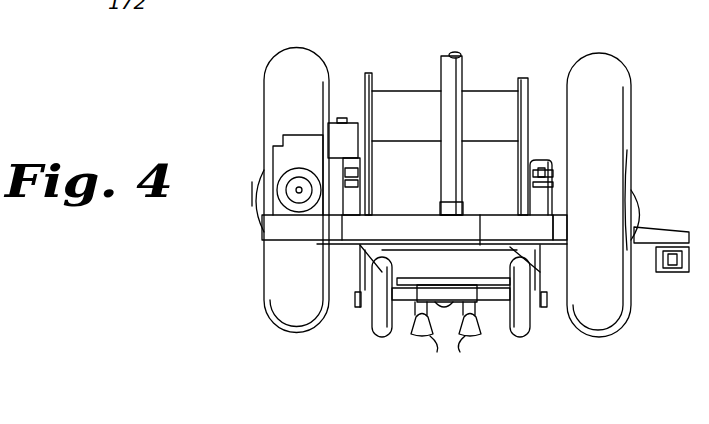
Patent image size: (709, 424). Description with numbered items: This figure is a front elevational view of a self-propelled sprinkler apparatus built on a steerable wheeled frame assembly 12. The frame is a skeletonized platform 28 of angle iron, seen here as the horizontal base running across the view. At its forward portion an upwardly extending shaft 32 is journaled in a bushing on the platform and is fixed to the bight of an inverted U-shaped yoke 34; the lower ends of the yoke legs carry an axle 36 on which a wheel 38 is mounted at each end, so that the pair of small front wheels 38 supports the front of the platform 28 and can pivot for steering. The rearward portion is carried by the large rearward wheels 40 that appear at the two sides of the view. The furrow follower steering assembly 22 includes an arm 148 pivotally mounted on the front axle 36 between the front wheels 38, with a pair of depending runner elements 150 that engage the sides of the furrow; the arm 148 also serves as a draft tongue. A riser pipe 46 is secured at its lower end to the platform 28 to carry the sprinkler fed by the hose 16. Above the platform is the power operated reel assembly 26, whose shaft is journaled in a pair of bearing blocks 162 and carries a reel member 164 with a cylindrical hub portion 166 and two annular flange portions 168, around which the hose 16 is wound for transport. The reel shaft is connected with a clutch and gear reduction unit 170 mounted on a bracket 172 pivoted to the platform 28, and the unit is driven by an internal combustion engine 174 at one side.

The steerable wheeled frame assembly 12 is at (558, 222).
The hose 16 is at (567, 40).
The furrow follower steering assembly 22 is at (414, 336).
The power operated reel assembly 26 is at (571, 103).
The platform 28 is at (343, 232).
The shaft 32 is at (453, 203).
The yoke 34 is at (436, 248).
The axle 36 is at (354, 296).
The wheel 38 is at (373, 327).
The rearward wheel 40 is at (275, 90).
The riser pipe 46 is at (519, 33).
The arm 148 is at (477, 288).
The runner element 150 is at (449, 355).
The bearing block 162 is at (357, 122).
The reel member 164 is at (374, 118).
The hub portion 166 is at (416, 147).
The flange portion 168 is at (518, 91).
The clutch and gear reduction unit 170 is at (37, 7).
The bracket 172 is at (322, 247).
The internal combustion engine 174 is at (273, 152).